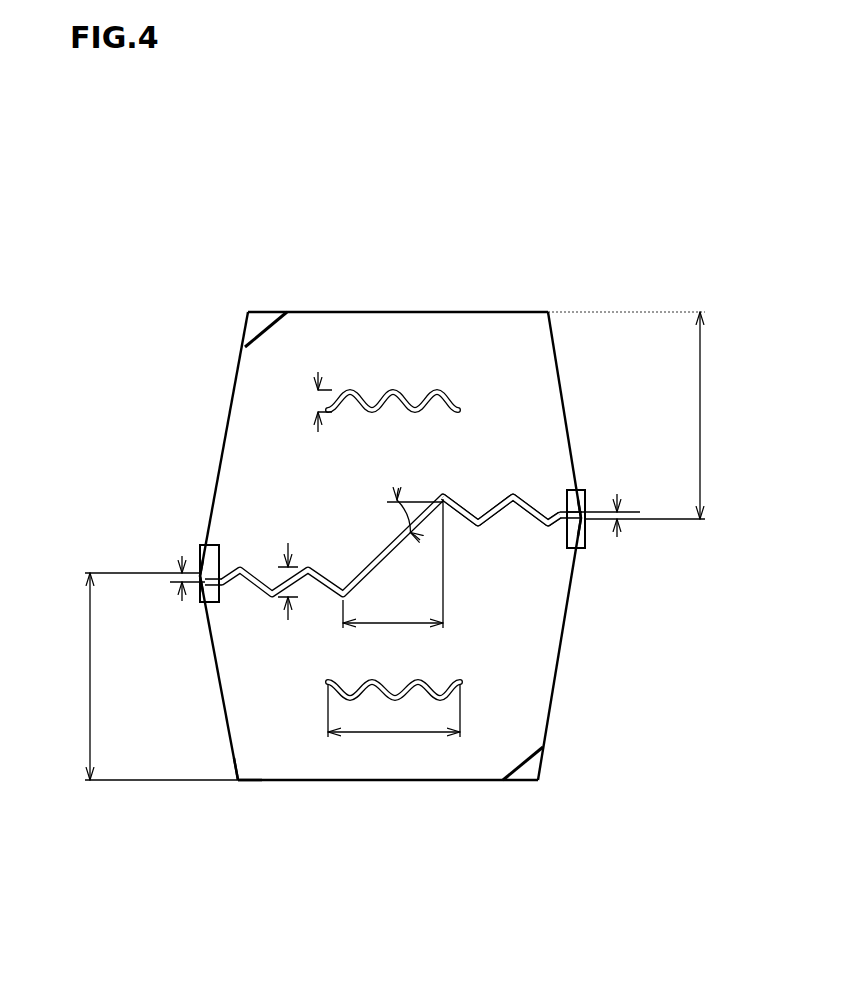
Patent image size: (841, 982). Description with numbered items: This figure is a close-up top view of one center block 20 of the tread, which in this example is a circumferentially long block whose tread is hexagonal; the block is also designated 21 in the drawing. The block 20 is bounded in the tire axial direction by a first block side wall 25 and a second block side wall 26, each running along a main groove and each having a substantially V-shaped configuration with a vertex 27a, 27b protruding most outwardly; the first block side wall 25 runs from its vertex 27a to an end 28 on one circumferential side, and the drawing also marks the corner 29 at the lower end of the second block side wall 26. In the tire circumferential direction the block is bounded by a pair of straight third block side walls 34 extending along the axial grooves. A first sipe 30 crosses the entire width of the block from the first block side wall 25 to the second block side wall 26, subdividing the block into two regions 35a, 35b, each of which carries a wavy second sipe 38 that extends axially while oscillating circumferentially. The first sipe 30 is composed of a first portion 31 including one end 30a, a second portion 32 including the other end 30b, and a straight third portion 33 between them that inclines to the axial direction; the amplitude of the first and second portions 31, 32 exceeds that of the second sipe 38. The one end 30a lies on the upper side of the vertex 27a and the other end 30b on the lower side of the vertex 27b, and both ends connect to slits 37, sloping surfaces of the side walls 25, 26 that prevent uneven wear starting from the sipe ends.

The block 20 is at (395, 535).
The pad body 21 is at (395, 535).
The first block side wall 25 is at (573, 614).
The second block side wall 26 is at (237, 380).
The vertex 27a is at (583, 525).
The vertex 27b is at (200, 582).
The end of the first block side wall 28 is at (549, 314).
The lower left corner 29 is at (238, 781).
The first sipe 30 is at (360, 496).
The one end of the first sipe 30a is at (580, 512).
The other end of the first sipe 30b is at (205, 584).
The first portion 31 is at (497, 505).
The second portion 32 is at (255, 585).
The third portion 33 is at (393, 545).
The third block side wall 34 is at (414, 312).
The region 35a is at (470, 360).
The region 35b is at (290, 750).
The slit 37 is at (208, 556).
The second sipe 38 is at (378, 392).